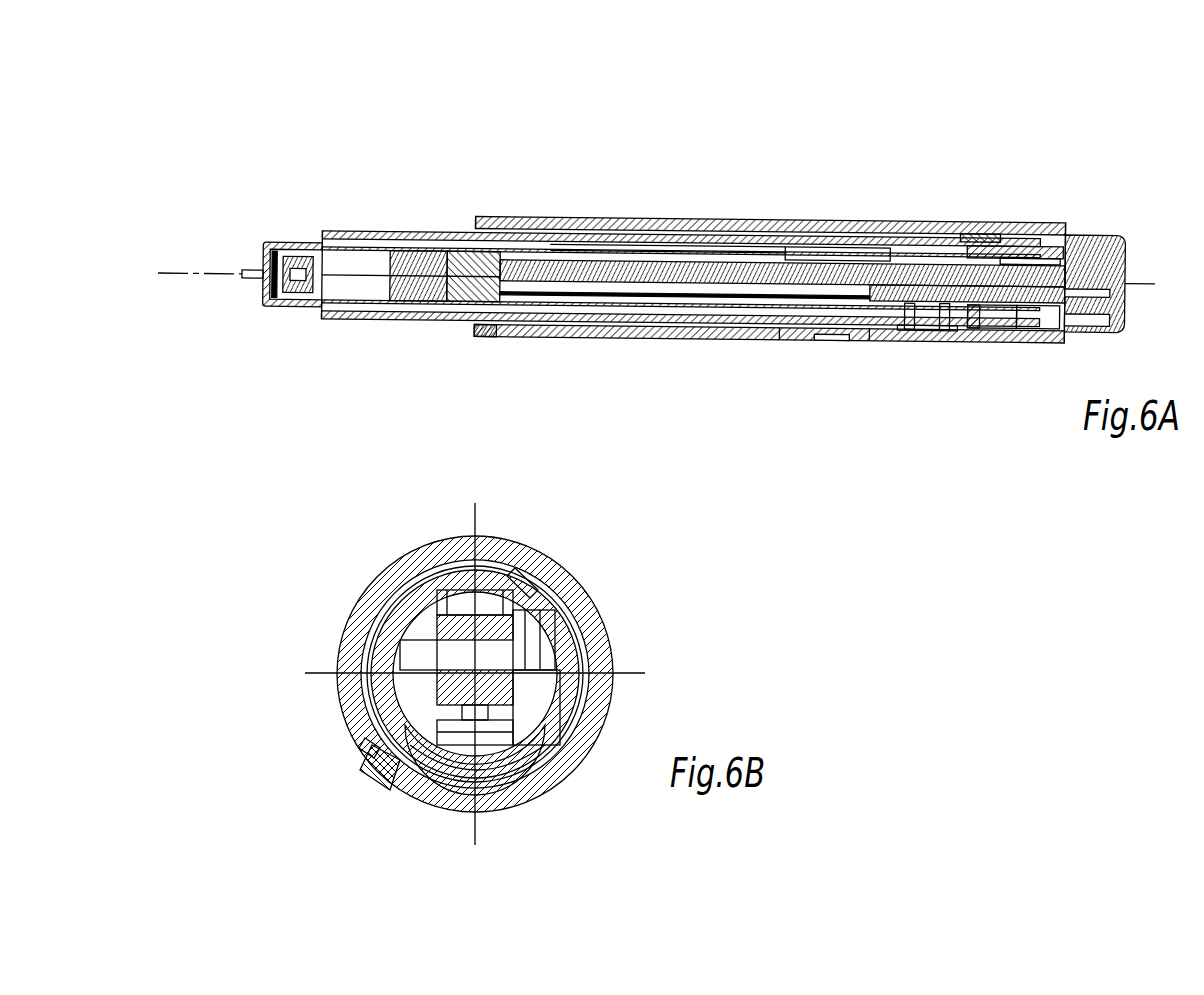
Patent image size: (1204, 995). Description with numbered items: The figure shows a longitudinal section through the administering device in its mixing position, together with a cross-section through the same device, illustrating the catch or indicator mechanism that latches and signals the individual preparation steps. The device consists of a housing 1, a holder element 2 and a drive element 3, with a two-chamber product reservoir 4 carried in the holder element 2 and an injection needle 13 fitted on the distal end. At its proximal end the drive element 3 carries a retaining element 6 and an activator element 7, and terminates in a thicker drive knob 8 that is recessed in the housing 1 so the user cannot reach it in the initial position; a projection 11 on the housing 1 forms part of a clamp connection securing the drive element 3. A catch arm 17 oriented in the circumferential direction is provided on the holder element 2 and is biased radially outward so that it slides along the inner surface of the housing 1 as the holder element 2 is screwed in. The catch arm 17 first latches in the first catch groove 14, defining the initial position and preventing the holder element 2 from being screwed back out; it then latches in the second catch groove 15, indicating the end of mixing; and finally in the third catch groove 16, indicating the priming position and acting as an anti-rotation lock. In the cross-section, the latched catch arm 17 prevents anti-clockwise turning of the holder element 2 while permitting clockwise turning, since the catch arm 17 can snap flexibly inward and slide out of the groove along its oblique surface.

In FIG. 6A, the housing 1 is at (560, 217).
In FIG. 6B, the housing 1 is at (402, 565).
In FIG. 6A, the holder element 2 is at (357, 232).
In FIG. 6B, the holder element 2 is at (385, 620).
In FIG. 6A, the drive element 3 is at (683, 222).
In FIG. 6B, the drive element 3 is at (445, 688).
In FIG. 6A, the product reservoir 4 is at (440, 230).
In FIG. 6B, the retaining element 6 is at (520, 585).
In FIG. 6A, the activator element 7 is at (1035, 240).
In FIG. 6A, the drive knob 8 is at (1105, 237).
In FIG. 6A, the projection 11 is at (980, 235).
In FIG. 6A, the injection needle 13 is at (213, 265).
In FIG. 6A, the first catch groove 14 is at (497, 325).
In FIG. 6A, the second catch groove 15 is at (830, 335).
In FIG. 6A, the third catch groove 16 is at (960, 332).
In FIG. 6B, the third catch groove 16 is at (370, 745).
In FIG. 6A, the catch arm 17 is at (925, 330).
In FIG. 6B, the catch arm 17 is at (365, 755).